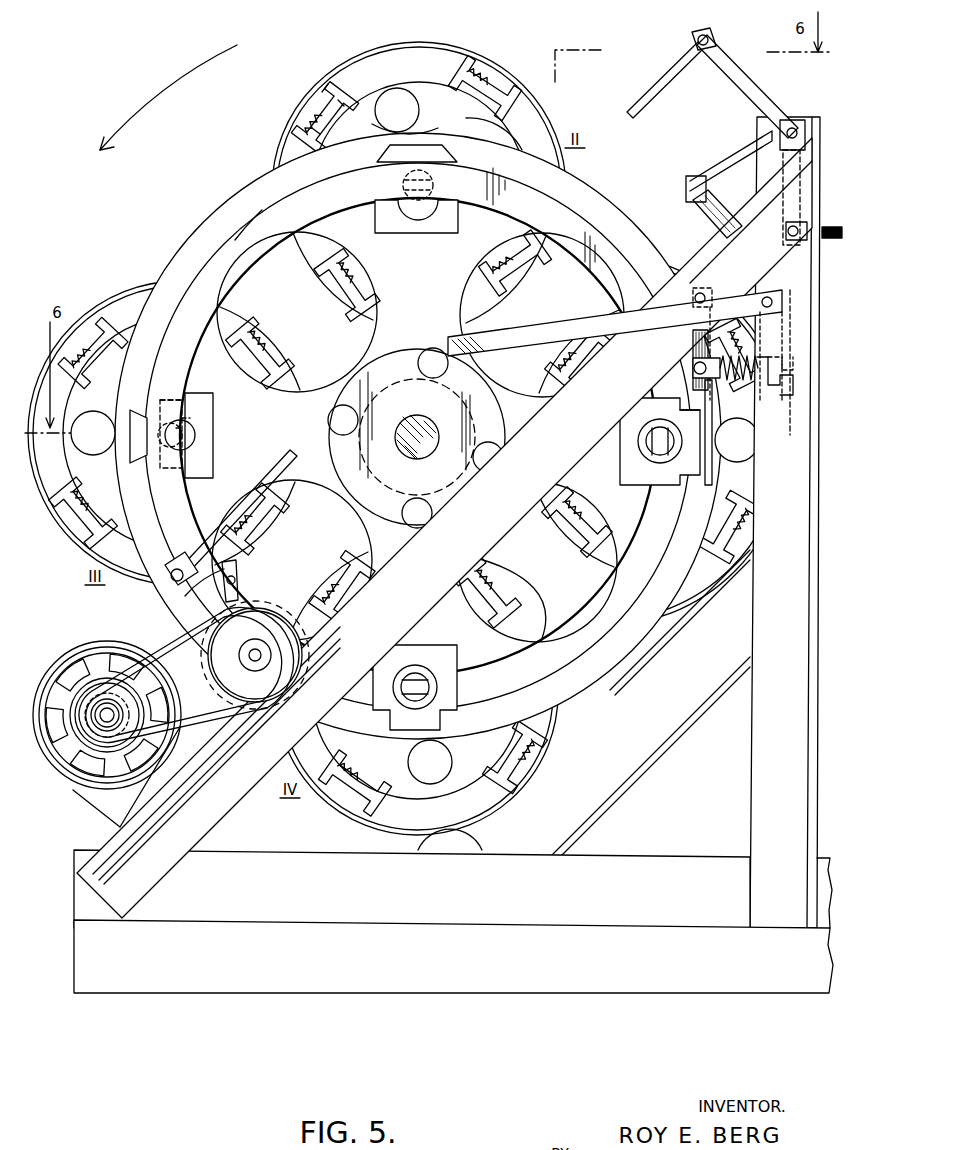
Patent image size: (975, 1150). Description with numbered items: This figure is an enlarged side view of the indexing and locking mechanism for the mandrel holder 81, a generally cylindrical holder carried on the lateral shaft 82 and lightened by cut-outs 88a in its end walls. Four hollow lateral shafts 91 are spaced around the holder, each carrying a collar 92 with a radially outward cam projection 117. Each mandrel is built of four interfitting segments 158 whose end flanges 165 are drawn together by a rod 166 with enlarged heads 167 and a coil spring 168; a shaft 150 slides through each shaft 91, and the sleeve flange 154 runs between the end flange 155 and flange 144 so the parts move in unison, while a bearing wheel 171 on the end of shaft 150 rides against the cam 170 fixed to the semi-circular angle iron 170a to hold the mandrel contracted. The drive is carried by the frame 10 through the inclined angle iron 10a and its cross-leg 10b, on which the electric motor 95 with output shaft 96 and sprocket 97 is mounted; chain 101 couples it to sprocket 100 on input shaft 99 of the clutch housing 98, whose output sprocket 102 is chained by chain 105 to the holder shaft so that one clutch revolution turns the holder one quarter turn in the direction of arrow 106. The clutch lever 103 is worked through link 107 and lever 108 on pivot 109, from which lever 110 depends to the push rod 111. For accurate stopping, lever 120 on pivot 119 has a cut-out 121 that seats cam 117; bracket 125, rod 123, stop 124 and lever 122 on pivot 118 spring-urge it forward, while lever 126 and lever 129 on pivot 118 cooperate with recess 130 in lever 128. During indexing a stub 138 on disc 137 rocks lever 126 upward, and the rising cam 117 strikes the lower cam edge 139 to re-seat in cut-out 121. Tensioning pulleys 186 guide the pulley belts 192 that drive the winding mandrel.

The frame 10 is at (752, 768).
The frame angle iron 10a is at (218, 812).
The cross-leg of angle iron 10b is at (122, 842).
The mandrel holder 81 is at (187, 251).
The lateral shaft 82 is at (418, 459).
The cut-outs 88a is at (342, 387).
The hollow lateral shaft 91 is at (195, 440).
The collar 92 is at (412, 235).
The electric motor 95 is at (62, 660).
The output shaft 96 is at (100, 725).
The sprocket 97 is at (130, 712).
The clutch housing 98 is at (190, 612).
The input shaft 99 is at (258, 654).
The sprocket 100 is at (310, 664).
The sprocket chain 101 is at (225, 734).
The sprocket 102 is at (238, 585).
The clutch lever 103 is at (170, 590).
The sprocket chain 105 is at (360, 592).
The arrow 106 is at (168, 97).
The link 107 is at (285, 468).
The lever 108 is at (728, 72).
The lateral pivot 109 is at (797, 125).
The lever 110 is at (807, 205).
The push rod 111 is at (832, 240).
The cam projection 117 is at (690, 470).
The lateral pivot 118 is at (770, 297).
The lateral pivot 119 is at (705, 290).
The lever 120 is at (692, 366).
The cut-out 121 is at (682, 403).
The lever 122 is at (772, 392).
The longitudinal rod 123 is at (736, 381).
The stop 124 is at (790, 420).
The bracket 125 is at (693, 345).
The lever 126 is at (535, 332).
The lever 128 is at (740, 156).
The lever 129 is at (706, 214).
The recess 130 is at (695, 176).
The disc 137 is at (418, 350).
The stub shaft 138 is at (428, 365).
The lower cam edge 139 is at (710, 515).
The flange 144 is at (520, 112).
The shaft 150 is at (185, 433).
The circumferential flange 154 is at (435, 130).
The outer end flange 155 is at (419, 112).
The mandrel segment 158 is at (437, 48).
The flange 165 is at (318, 96).
The rod 166 is at (318, 134).
The end head 167 is at (340, 100).
The coil spring 168 is at (324, 92).
The cam 170 is at (170, 400).
The semi-circular angle iron 170a is at (240, 235).
The bearing wheel 171 is at (190, 418).
The tensioning pulley 186 is at (470, 846).
The pulley belt 192 is at (685, 725).